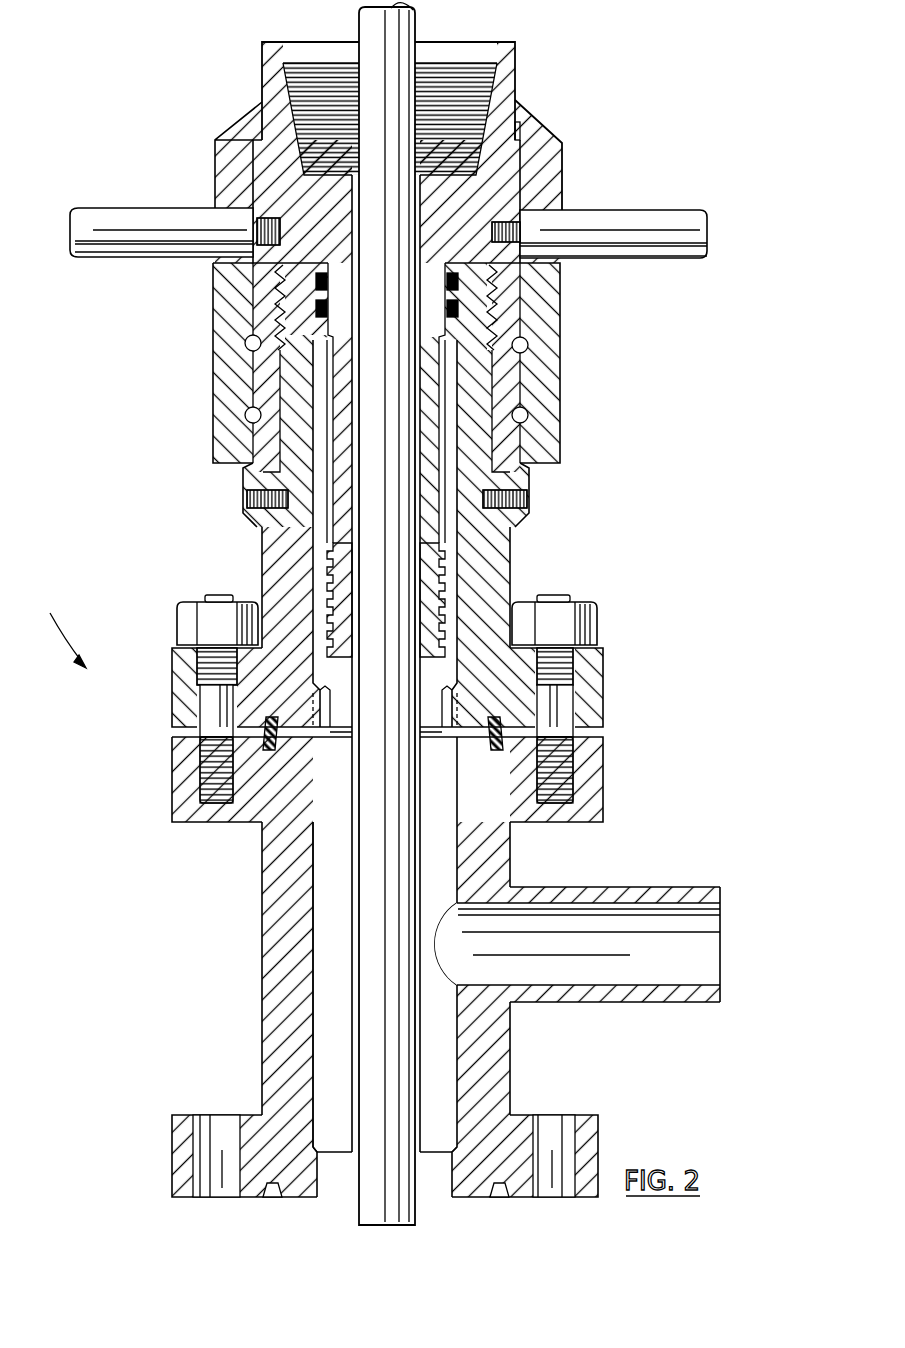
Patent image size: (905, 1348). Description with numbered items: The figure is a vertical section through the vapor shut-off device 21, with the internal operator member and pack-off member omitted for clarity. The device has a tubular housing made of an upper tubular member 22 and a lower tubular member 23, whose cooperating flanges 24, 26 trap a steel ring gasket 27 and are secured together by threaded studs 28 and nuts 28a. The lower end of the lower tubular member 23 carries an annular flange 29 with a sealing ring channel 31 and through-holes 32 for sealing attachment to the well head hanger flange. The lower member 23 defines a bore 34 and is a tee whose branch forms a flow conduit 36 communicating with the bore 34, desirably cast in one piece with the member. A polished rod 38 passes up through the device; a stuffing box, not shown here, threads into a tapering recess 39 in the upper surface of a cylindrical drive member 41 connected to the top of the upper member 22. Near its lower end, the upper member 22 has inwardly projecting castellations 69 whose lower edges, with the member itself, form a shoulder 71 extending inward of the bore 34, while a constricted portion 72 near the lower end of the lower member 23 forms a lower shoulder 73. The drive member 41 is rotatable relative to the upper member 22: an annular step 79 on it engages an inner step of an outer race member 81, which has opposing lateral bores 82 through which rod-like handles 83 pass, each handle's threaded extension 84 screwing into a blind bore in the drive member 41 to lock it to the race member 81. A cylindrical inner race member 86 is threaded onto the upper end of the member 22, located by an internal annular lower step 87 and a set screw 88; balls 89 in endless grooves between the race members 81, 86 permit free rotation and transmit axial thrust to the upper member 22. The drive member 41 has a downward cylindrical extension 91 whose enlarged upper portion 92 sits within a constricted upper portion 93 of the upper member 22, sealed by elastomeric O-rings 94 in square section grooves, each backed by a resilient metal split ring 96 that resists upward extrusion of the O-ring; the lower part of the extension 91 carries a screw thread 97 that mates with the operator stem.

The vapor shut-off device 21 is at (57, 625).
The upper tubular member 22 is at (262, 558).
The lower tubular member 23 is at (262, 952).
The flange 24 is at (172, 672).
The flange 26 is at (172, 772).
The steel ring gasket 27 is at (277, 742).
The threaded stud 28 is at (210, 703).
The nut 28a is at (177, 620).
The annular flange 29 is at (172, 1142).
The sealing ring channel 31 is at (282, 1197).
The through-hole 32 is at (238, 1128).
The bore 34 is at (320, 875).
The flow conduit 36 is at (600, 887).
The polished rod 38 is at (367, 30).
The tapering recess 39 is at (492, 80).
The cylindrical drive member 41 is at (510, 80).
The castellations 69 is at (328, 707).
The shoulder 71 is at (323, 732).
The constricted portion 72 is at (445, 1152).
The shoulder 73 is at (333, 1150).
The annular step 79 is at (520, 125).
The outer race member 81 is at (547, 172).
The laterally extending bores 82 is at (228, 207).
The handle 83 is at (132, 222).
The threaded extension 84 is at (257, 228).
The inner race member 86 is at (507, 450).
The internal annular lower step 87 is at (517, 474).
The set screw 88 is at (250, 497).
The balls 89 is at (246, 348).
The downward cylindrical extension 91 is at (342, 465).
The enlarged diameter upper portion 92 is at (470, 298).
The constricted upper portion 93 is at (457, 327).
The O-ring 94 is at (280, 290).
The resilient metal split ring 96 is at (316, 280).
The screw thread 97 is at (445, 592).